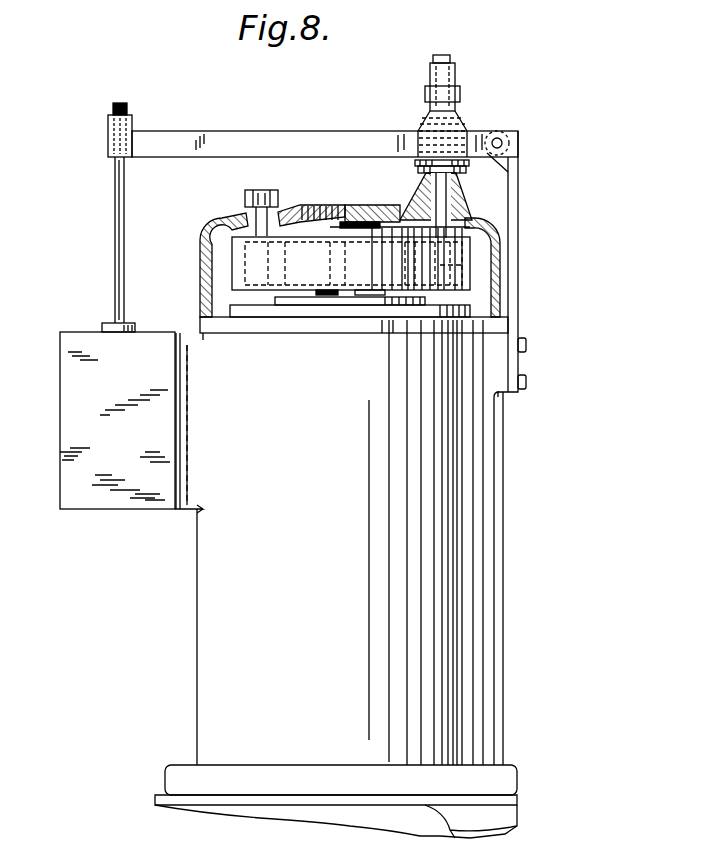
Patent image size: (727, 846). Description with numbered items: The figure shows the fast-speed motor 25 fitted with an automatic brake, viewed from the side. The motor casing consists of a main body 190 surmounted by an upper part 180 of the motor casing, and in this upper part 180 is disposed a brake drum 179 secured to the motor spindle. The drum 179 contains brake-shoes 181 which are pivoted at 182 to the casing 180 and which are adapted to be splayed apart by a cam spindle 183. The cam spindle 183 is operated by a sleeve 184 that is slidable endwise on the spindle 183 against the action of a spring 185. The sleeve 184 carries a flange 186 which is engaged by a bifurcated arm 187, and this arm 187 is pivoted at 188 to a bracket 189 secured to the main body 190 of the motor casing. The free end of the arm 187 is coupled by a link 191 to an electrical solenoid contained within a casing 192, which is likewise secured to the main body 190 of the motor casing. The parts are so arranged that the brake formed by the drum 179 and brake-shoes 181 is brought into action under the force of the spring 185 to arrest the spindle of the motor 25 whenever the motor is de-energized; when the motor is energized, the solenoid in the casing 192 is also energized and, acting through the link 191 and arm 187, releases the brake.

The fast-speed motor 25 is at (494, 672).
The brake drum 179 is at (230, 246).
The upper part of the motor casing 180 is at (205, 268).
The brake-shoes 181 is at (300, 212).
The pivot 182 is at (258, 200).
The cam spindle 183 is at (440, 200).
The sleeve 184 is at (430, 123).
The spring 185 is at (458, 172).
The flange 186 is at (420, 165).
The bifurcated arm 187 is at (323, 135).
The pivot 188 is at (494, 138).
The bracket 189 is at (516, 235).
The main body of the motor casing 190 is at (494, 458).
The link 191 is at (118, 202).
The casing 192 is at (128, 505).